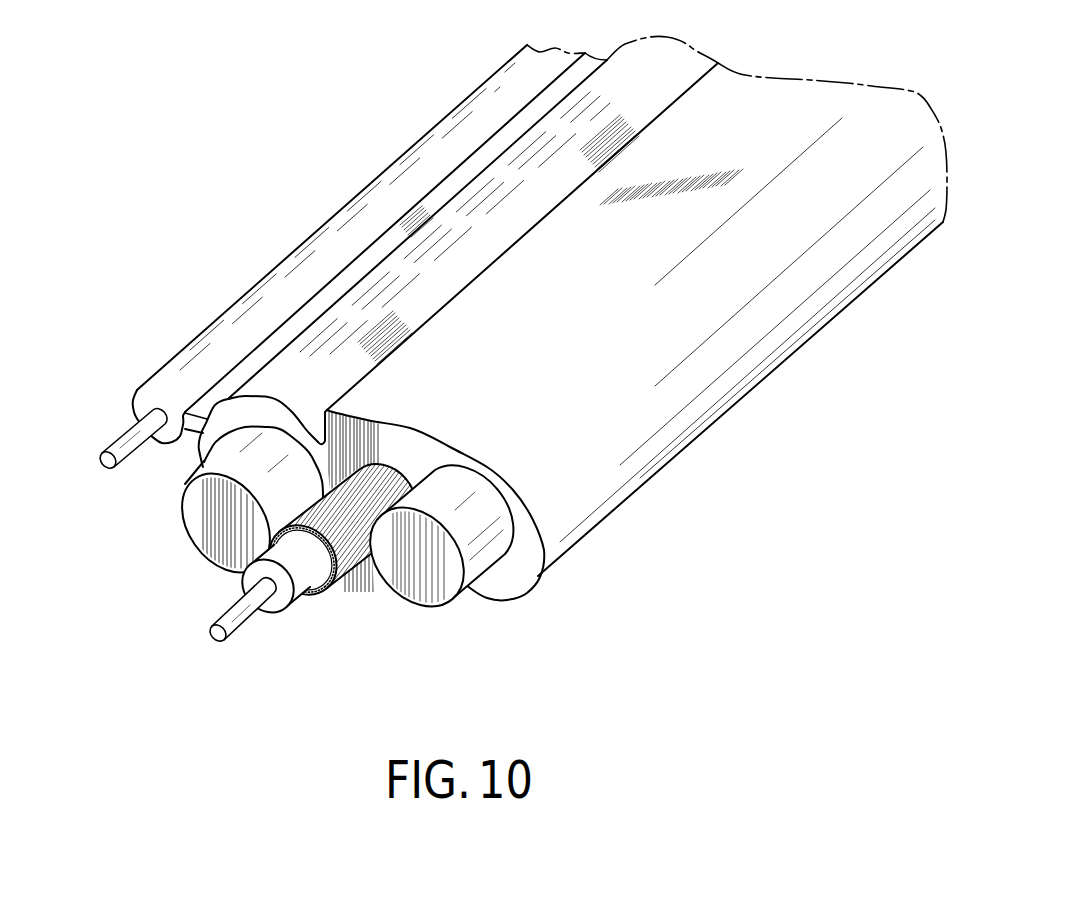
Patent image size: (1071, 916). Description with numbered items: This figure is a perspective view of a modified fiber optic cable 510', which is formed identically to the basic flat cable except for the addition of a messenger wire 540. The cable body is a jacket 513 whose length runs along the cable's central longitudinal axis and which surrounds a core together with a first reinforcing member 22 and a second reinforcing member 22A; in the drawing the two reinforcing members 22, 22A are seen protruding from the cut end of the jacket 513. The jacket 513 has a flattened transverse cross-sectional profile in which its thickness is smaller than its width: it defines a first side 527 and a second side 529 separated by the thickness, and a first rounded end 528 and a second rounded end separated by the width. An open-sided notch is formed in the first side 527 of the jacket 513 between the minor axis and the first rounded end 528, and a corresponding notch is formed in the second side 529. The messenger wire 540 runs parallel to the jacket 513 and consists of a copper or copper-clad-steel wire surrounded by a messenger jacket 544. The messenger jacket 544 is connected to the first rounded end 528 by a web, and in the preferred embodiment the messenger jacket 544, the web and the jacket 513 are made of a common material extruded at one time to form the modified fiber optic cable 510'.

The modified fiber optic cable 510' is at (488, 352).
The first side 527 is at (511, 378).
The jacket 513 is at (426, 463).
The first rounded end 528 is at (203, 448).
The first reinforcing member 22 is at (263, 540).
The second reinforcing member 22A is at (447, 588).
The second side 529 is at (367, 575).
The messenger wire 540 is at (178, 332).
The messenger jacket 544 is at (143, 398).